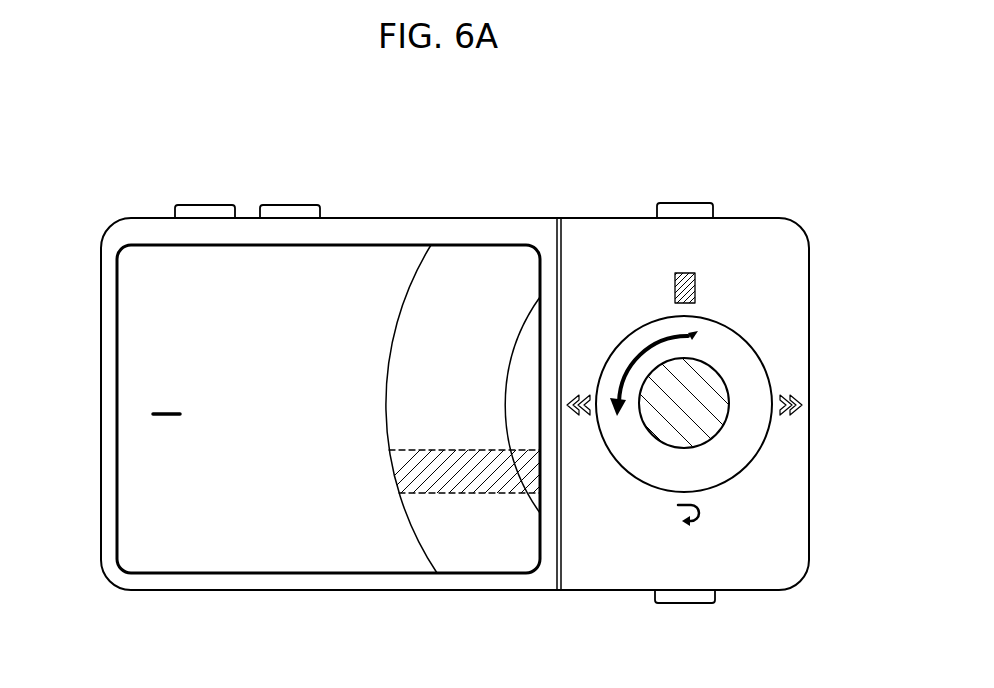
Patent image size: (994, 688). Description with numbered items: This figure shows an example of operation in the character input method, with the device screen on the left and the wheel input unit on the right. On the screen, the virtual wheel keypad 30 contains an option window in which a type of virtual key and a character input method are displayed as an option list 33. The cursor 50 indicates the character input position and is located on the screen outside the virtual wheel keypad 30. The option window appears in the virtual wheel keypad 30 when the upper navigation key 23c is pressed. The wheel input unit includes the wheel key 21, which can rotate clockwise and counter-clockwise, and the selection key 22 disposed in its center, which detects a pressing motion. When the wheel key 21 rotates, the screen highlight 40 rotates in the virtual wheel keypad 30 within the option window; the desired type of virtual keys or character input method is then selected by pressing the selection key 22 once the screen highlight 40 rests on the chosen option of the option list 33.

The wheel key 21 is at (758, 423).
The selection key 22 is at (716, 392).
The upper navigation key 23c is at (686, 272).
The virtual wheel keypad 30 is at (418, 548).
The option list 33 is at (388, 427).
The screen highlight 40 is at (409, 499).
The cursor 50 is at (158, 412).